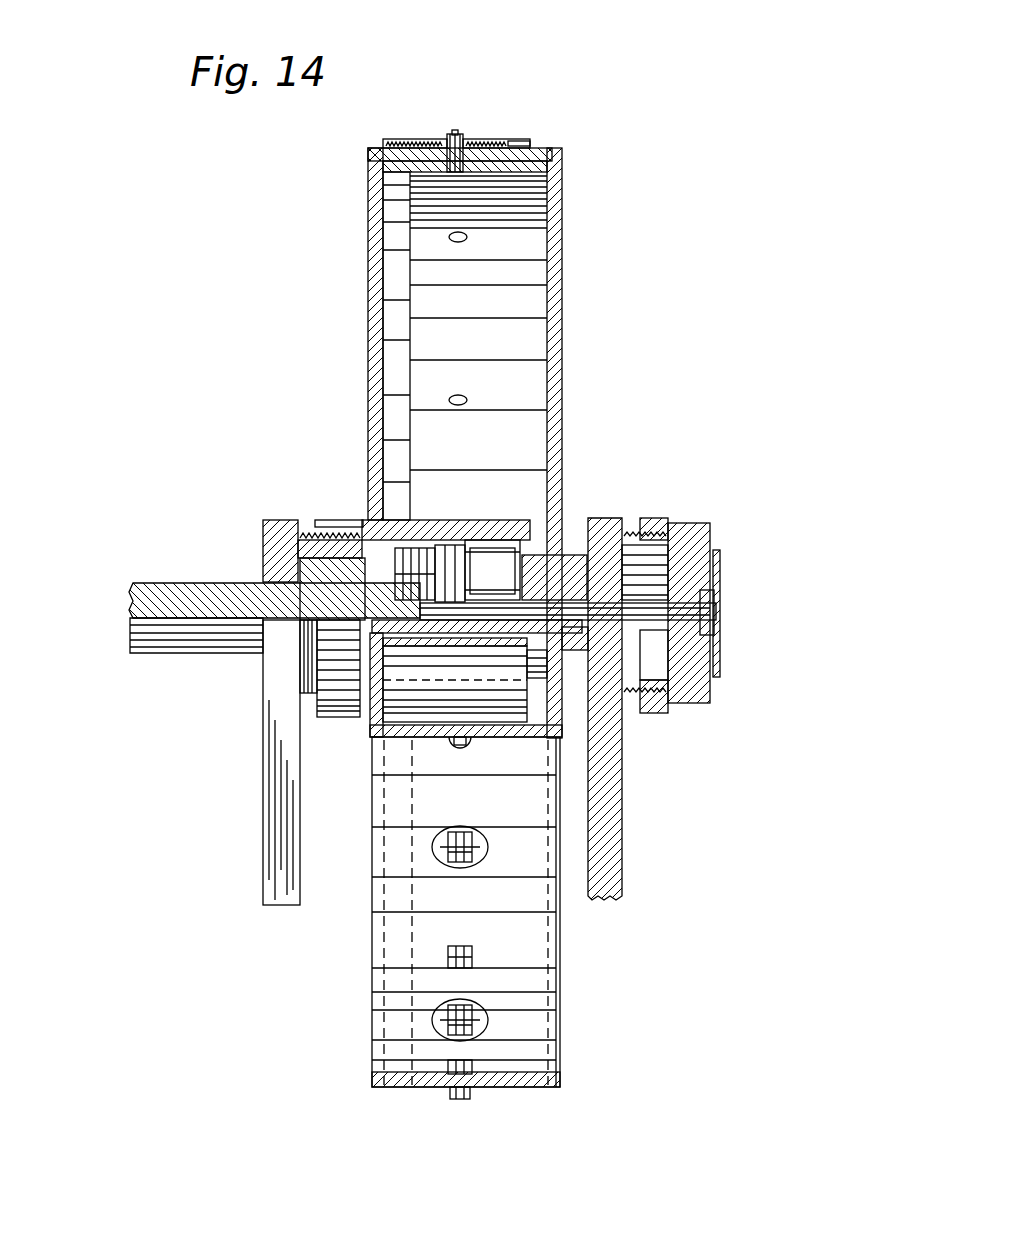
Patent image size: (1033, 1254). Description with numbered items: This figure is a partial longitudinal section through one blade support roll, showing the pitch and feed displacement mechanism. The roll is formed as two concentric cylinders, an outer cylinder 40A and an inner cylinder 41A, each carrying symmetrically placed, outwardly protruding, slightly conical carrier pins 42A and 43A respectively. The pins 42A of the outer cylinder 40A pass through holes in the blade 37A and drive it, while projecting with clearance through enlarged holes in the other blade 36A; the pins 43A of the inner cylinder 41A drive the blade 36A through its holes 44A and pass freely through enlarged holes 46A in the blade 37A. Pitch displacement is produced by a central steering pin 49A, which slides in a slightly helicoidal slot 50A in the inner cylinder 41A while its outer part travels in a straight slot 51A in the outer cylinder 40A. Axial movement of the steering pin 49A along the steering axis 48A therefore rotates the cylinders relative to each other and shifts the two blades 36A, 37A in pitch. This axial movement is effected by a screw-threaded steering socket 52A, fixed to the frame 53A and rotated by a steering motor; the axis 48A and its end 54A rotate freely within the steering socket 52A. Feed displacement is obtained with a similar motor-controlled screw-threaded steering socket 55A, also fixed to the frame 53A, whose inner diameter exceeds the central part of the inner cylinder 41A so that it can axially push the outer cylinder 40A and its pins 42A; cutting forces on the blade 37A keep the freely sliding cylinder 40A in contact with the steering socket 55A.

The blade 36A is at (370, 153).
The blade 37A is at (410, 140).
The outer cylinder 40A is at (377, 528).
The inner cylinder 41A is at (543, 572).
The carrier pins 42A is at (467, 737).
The carrier pins 43A is at (458, 137).
The holes 44A is at (447, 137).
The enlarged holes 46A is at (482, 140).
The steering axis 48A is at (690, 610).
The steering pin 49A is at (453, 553).
The helicoidal slot 50A is at (483, 568).
The straight slot 51A is at (420, 552).
The steering socket 52A is at (712, 530).
The frame 53A is at (265, 535).
The end 54A is at (720, 622).
The steering socket 55A is at (333, 525).